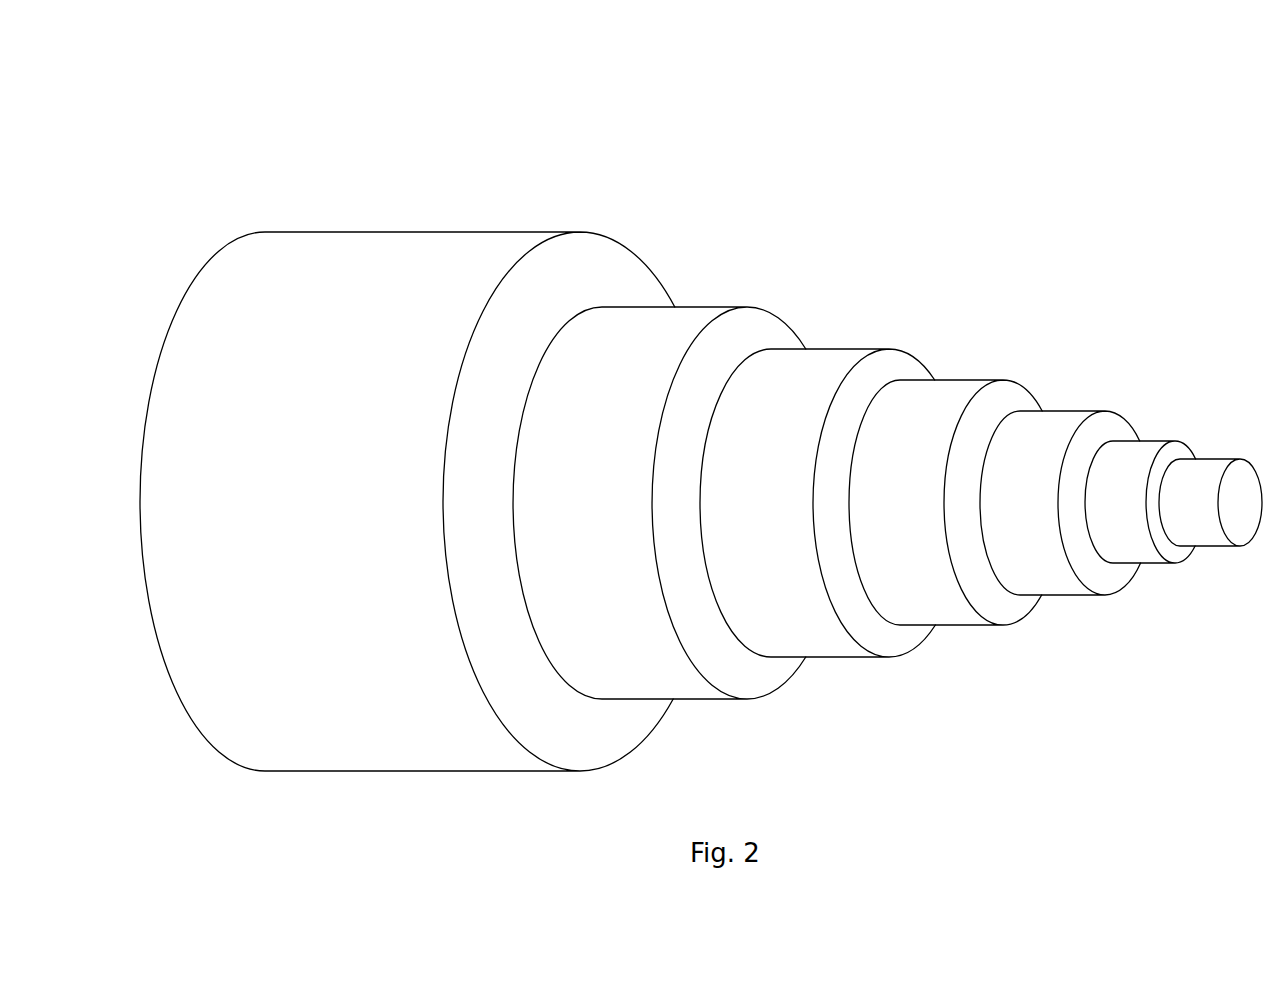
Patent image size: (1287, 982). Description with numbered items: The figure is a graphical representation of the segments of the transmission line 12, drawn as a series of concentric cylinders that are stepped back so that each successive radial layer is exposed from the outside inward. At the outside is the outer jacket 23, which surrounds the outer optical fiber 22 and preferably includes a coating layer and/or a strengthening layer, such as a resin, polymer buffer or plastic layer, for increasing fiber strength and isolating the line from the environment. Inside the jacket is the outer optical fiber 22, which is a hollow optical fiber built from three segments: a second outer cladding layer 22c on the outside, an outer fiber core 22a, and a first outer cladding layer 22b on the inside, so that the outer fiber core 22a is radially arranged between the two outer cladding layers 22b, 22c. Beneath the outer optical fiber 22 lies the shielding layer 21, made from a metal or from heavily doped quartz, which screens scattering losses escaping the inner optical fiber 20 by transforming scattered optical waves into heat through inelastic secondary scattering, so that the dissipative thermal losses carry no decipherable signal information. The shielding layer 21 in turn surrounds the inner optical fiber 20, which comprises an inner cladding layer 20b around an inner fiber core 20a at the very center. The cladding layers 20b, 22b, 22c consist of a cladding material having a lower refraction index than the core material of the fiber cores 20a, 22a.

The transmission line 12 is at (298, 173).
The outer jacket 23 is at (542, 255).
The outer optical fiber 22 is at (1037, 177).
The second outer cladding layer 22c is at (752, 322).
The outer fiber core 22a is at (887, 360).
The first outer cladding layer 22b is at (1009, 393).
The shielding layer 21 is at (1109, 427).
The inner optical fiber 20 is at (1262, 177).
The inner cladding layer 20b is at (1176, 448).
The inner fiber core 20a is at (1234, 472).